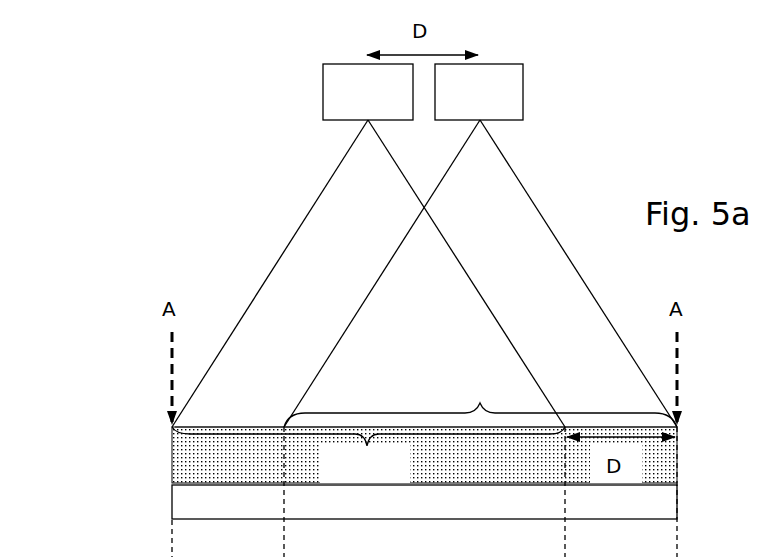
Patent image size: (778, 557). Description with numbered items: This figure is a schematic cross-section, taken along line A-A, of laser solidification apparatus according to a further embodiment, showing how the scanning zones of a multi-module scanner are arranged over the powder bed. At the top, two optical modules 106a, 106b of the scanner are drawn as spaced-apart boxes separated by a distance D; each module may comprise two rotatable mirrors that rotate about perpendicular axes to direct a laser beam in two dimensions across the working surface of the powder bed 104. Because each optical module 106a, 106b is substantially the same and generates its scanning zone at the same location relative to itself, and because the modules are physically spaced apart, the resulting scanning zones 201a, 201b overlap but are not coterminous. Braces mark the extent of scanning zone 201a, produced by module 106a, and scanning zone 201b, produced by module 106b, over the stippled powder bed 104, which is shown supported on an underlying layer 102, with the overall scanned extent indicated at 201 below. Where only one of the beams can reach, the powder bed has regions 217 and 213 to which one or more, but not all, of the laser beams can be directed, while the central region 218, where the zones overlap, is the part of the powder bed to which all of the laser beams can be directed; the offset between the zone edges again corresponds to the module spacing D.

The optical module 106a is at (320, 88).
The optical module 106b is at (526, 93).
The powder bed 104 is at (205, 463).
The substrate 102 is at (205, 500).
The exposure region 201 is at (424, 492).
The scanning zone 201a is at (368, 454).
The scanning zone 201b is at (480, 396).
The region 217 is at (246, 425).
The central region 218 is at (398, 425).
The region 213 is at (600, 425).